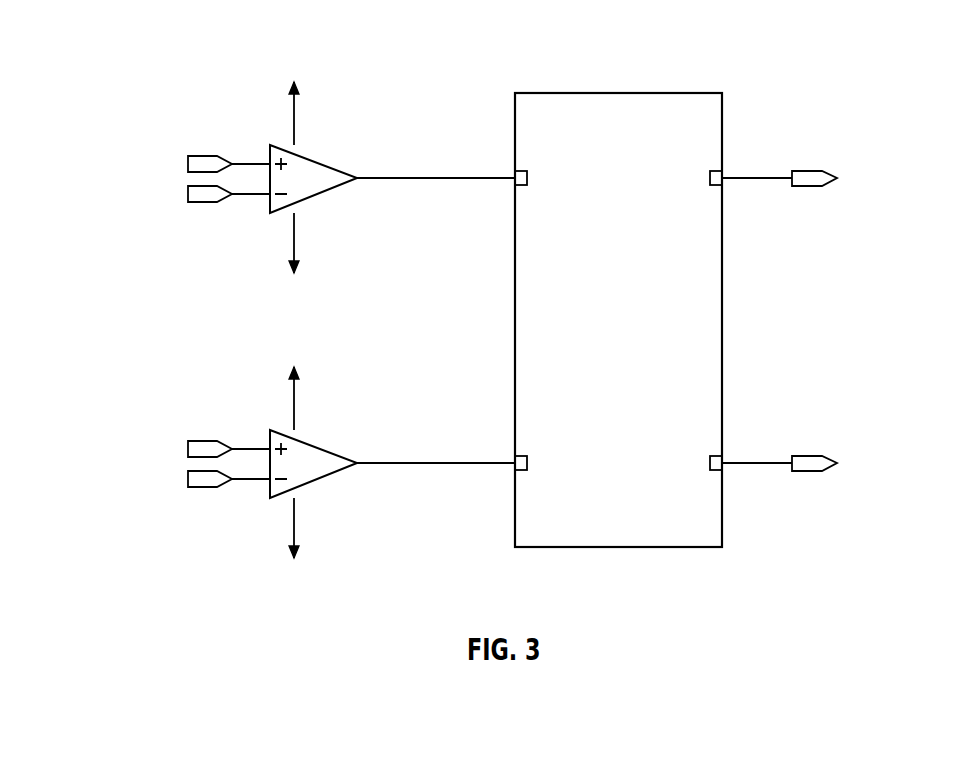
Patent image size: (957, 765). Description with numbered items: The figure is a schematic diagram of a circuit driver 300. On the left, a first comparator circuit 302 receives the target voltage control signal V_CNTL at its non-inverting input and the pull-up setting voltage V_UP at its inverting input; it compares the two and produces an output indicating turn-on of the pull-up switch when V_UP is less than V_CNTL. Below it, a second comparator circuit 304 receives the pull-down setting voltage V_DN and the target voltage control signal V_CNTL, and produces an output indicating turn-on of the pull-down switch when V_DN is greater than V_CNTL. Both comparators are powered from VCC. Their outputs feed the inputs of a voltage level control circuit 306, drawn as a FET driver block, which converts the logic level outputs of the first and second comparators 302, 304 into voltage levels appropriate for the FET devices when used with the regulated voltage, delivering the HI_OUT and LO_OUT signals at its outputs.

The circuit driver 300 is at (856, 87).
The first comparator circuit 302 is at (312, 195).
The second comparator circuit 304 is at (312, 480).
The voltage level control circuit 306 is at (617, 93).